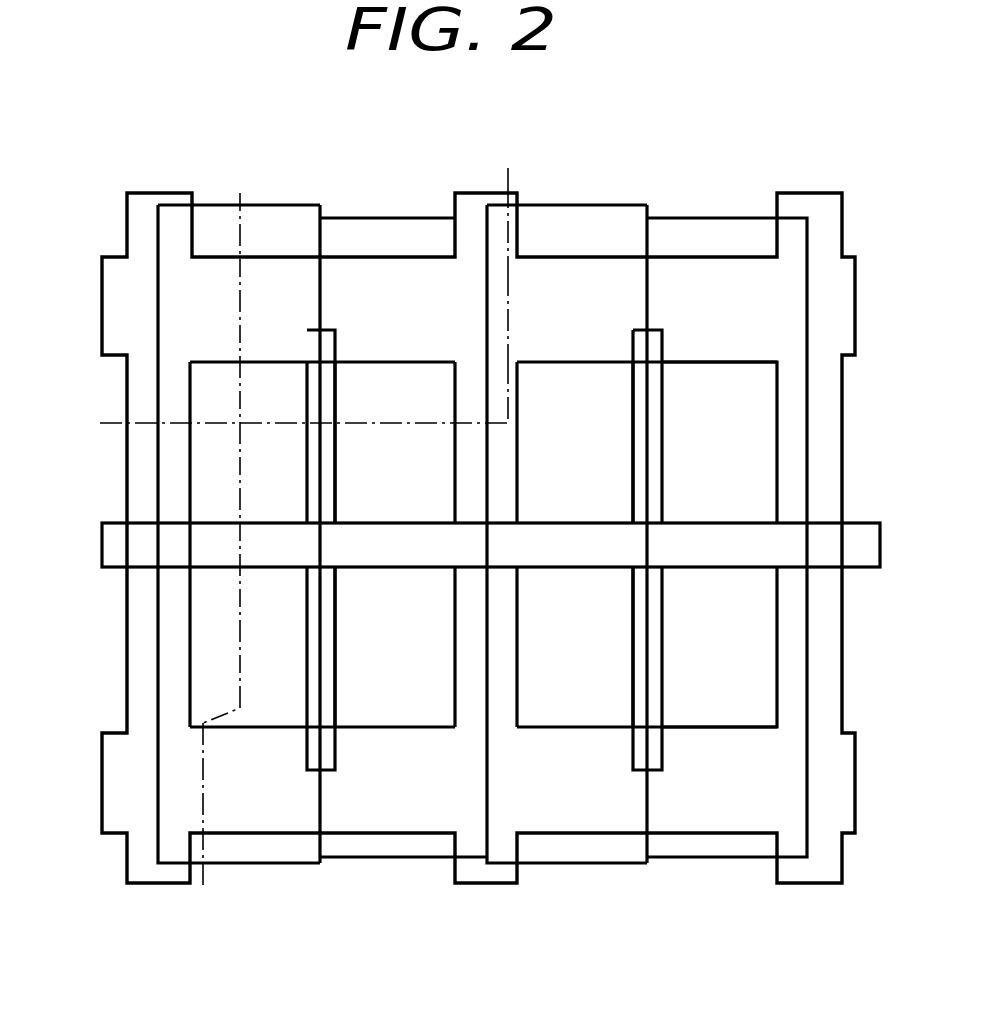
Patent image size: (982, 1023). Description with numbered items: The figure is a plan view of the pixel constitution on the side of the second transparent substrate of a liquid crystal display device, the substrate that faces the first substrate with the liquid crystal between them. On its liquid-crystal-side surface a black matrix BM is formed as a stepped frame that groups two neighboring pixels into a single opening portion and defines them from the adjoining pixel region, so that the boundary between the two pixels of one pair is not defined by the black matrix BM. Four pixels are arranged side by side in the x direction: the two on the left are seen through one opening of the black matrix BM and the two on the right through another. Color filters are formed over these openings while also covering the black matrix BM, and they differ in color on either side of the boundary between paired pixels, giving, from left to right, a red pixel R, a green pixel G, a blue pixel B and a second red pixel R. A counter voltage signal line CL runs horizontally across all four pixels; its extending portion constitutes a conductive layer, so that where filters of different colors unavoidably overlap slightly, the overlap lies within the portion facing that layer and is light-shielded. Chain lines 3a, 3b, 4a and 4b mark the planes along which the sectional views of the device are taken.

The black matrix BM is at (128, 212).
The counter voltage signal line CL is at (110, 547).
The red pixel R is at (483, 550).
The green pixel G is at (395, 544).
The blue pixel B is at (647, 544).
The section line 3a is at (286, 421).
The section line 3b is at (503, 275).
The section line 4a is at (205, 826).
The section line 4b is at (227, 436).